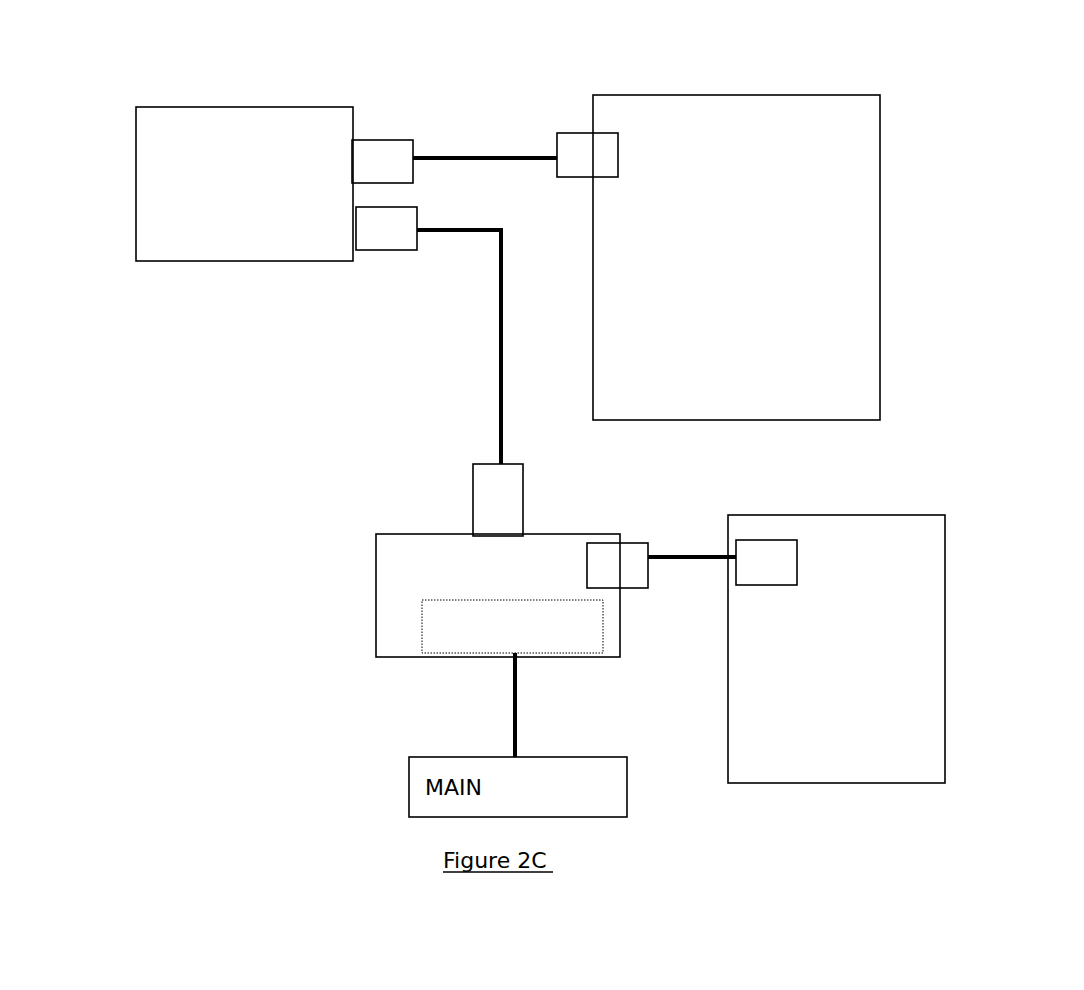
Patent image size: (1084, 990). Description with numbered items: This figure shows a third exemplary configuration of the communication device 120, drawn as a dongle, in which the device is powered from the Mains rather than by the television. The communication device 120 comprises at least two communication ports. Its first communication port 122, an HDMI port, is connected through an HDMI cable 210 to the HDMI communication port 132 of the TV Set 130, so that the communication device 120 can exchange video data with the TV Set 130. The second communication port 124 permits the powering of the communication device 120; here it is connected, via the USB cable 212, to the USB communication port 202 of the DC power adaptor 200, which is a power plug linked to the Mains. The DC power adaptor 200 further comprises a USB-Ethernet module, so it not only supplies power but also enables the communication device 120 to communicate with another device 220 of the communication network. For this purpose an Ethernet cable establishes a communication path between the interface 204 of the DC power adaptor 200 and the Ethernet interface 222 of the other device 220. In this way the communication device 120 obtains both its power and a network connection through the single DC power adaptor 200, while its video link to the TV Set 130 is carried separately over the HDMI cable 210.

The communication device 120 is at (168, 157).
The first communication port 122 is at (398, 167).
The second communication port 124 is at (380, 236).
The TV Set 130 is at (680, 108).
The HDMI communication port 132 is at (592, 156).
The HDMI cable 210 is at (512, 157).
The USB cable 212 is at (505, 373).
The DC power adaptor 200 is at (387, 577).
The USB communication port 202 is at (496, 483).
The interface 204 is at (632, 588).
The other device 220 is at (838, 758).
The Ethernet interface 222 is at (756, 577).